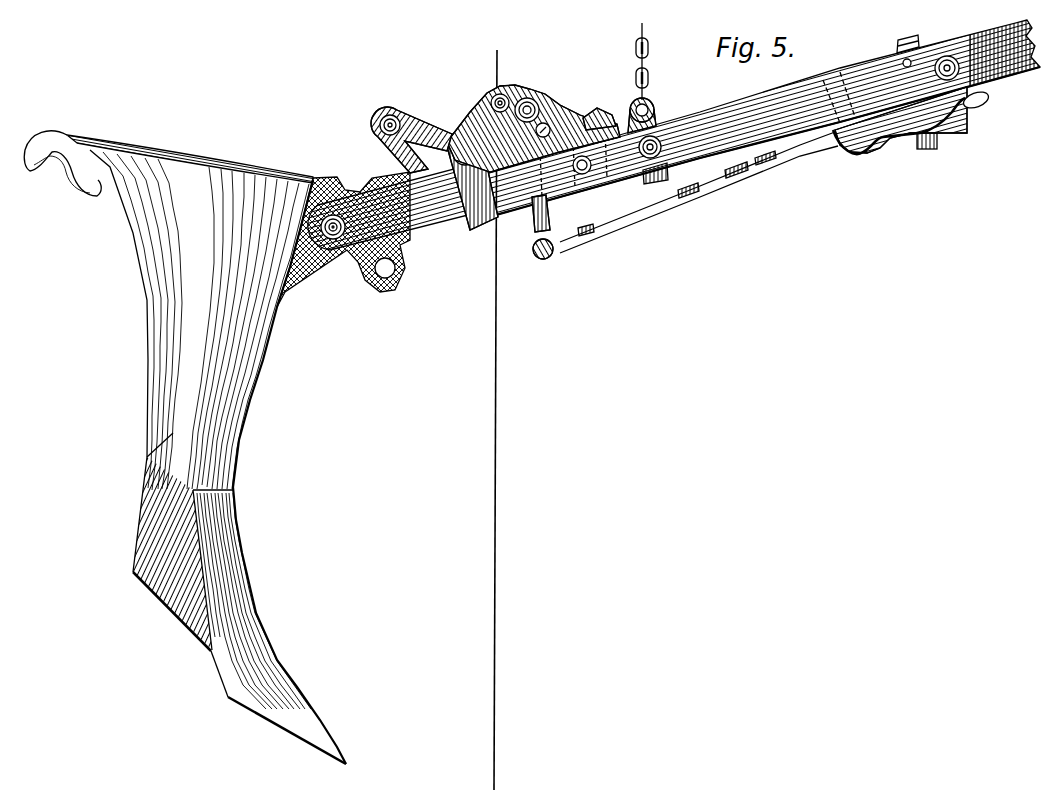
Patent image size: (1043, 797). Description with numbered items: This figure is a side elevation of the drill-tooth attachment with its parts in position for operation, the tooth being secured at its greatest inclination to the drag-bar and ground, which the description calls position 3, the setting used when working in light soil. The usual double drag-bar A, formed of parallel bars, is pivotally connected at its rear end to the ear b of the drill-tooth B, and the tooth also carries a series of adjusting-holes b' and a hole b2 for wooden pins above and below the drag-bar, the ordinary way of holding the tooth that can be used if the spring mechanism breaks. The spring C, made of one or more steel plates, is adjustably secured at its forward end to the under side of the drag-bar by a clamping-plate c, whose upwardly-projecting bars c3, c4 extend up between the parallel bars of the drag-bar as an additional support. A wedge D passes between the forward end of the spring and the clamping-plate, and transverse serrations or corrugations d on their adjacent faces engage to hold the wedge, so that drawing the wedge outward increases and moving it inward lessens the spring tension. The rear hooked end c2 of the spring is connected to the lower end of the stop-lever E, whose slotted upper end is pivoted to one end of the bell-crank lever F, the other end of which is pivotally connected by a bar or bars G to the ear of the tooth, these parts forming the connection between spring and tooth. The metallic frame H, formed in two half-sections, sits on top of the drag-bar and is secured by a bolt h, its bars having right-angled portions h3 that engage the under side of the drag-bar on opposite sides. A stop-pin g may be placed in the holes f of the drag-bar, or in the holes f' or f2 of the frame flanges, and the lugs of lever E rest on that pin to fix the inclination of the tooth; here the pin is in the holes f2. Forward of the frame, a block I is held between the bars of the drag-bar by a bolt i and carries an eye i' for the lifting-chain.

The drill-tooth B is at (185, 447).
The ear b is at (394, 206).
The adjusting-holes b' is at (403, 163).
The hole b2 is at (387, 280).
The double drag-bar A is at (759, 120).
The bar or bars G is at (379, 128).
The bell-crank lever F is at (447, 130).
The metallic frame H is at (538, 110).
The stop-pin g is at (540, 90).
The holes f is at (599, 115).
The holes f' is at (560, 115).
The holes f2 is at (540, 95).
The bolt h is at (465, 160).
The right-angled portions h3 is at (473, 186).
The stop-lever E is at (546, 213).
The hooked end c2 is at (553, 251).
The spring C is at (699, 192).
The clamping-plate c is at (896, 110).
The upwardly-projecting bar c3 is at (839, 89).
The upwardly-projecting bar c4 is at (947, 53).
The wedge D is at (989, 100).
The serrations or corrugations d is at (973, 112).
The block I is at (643, 115).
The bolt i is at (654, 147).
The eye i' is at (658, 63).
The position 3 is at (356, 773).